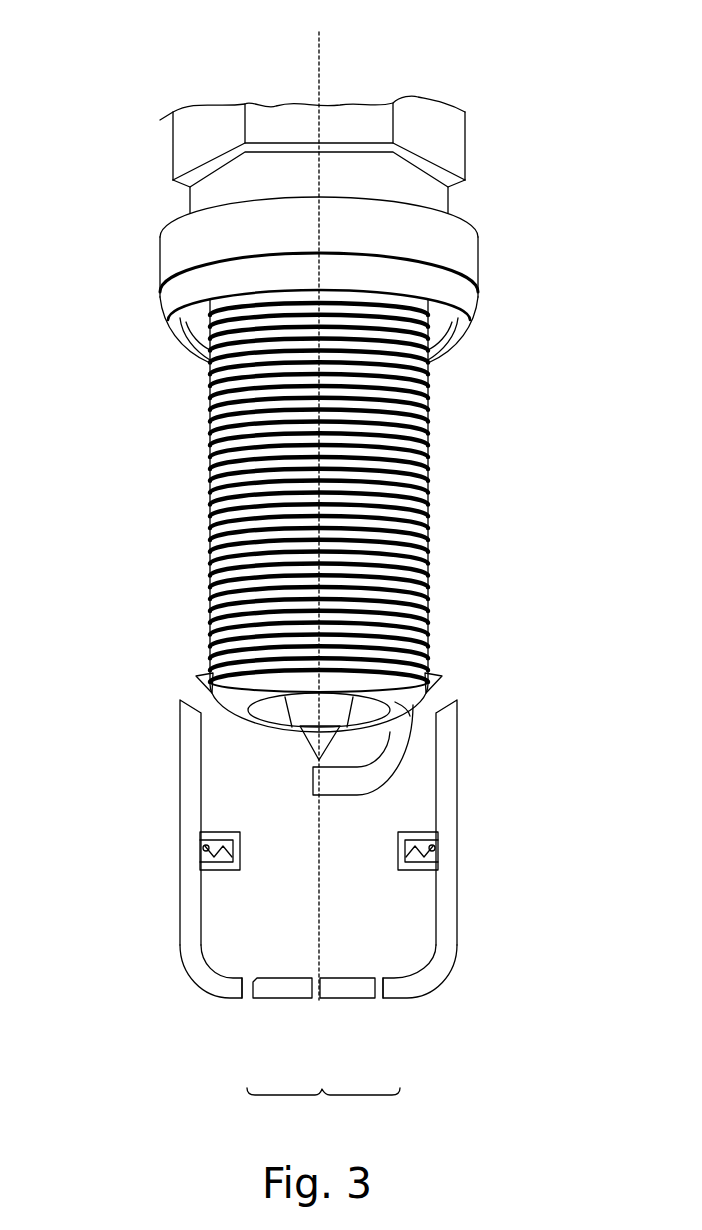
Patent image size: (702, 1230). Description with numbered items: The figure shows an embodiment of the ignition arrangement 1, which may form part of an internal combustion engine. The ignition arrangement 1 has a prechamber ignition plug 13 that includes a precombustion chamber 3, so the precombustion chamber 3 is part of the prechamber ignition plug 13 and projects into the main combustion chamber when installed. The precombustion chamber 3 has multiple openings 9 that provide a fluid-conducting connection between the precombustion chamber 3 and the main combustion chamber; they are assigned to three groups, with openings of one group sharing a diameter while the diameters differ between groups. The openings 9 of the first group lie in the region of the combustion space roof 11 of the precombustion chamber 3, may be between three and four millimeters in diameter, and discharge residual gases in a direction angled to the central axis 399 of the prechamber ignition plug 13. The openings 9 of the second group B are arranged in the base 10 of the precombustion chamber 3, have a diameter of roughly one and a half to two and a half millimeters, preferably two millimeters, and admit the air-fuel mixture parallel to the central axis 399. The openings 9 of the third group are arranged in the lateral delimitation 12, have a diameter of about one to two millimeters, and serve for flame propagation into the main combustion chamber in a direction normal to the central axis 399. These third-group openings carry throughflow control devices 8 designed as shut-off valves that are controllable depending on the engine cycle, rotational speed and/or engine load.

The ignition arrangement 1 is at (103, 127).
The precombustion chamber 3 is at (407, 910).
The throughflow control device 8 is at (200, 838).
The opening 9 is at (247, 1000).
The base 10 is at (265, 982).
The combustion space roof 11 is at (437, 678).
The lateral delimitation 12 is at (457, 735).
The prechamber ignition plug 13 is at (246, 499).
The central axis 399 is at (322, 68).
The second group B is at (323, 1108).